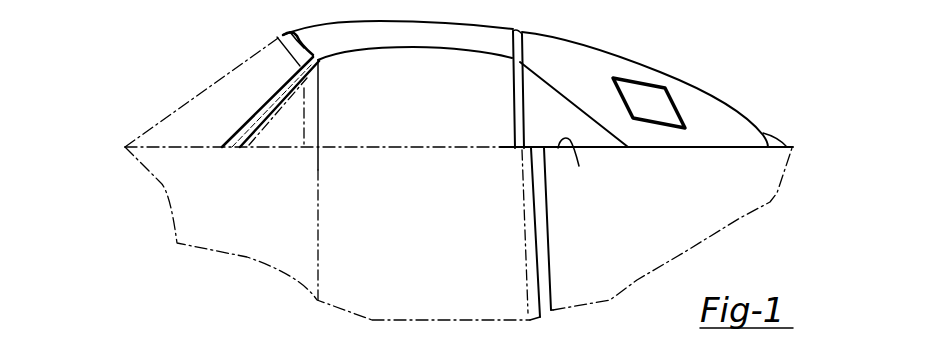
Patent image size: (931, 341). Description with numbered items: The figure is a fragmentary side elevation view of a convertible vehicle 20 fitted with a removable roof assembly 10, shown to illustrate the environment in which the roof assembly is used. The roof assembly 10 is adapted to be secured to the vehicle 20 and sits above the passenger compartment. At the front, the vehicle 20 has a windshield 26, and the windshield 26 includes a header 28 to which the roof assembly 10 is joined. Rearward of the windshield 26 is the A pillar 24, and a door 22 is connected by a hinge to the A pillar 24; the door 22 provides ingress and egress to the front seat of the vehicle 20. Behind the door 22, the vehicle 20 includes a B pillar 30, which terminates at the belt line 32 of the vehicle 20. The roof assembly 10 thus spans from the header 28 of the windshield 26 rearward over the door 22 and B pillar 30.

The removable roof assembly 10 is at (573, 67).
The convertible vehicle 20 is at (223, 203).
The door 22 is at (395, 233).
The A pillar 24 is at (263, 116).
The windshield 26 is at (237, 80).
The header 28 is at (287, 40).
The B pillar 30 is at (540, 234).
The belt line 32 is at (579, 166).